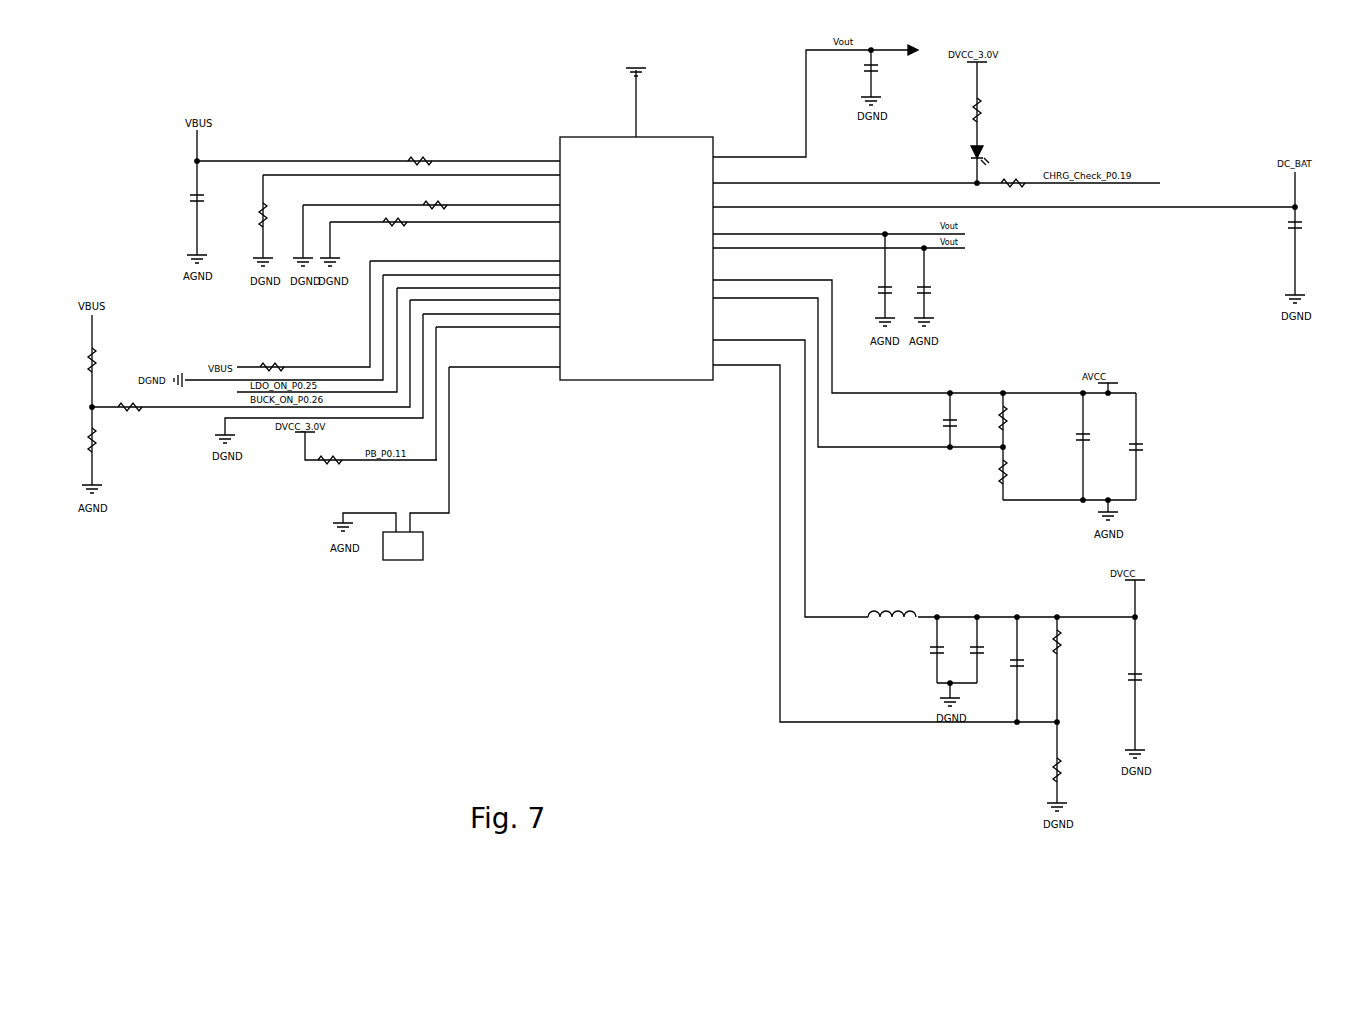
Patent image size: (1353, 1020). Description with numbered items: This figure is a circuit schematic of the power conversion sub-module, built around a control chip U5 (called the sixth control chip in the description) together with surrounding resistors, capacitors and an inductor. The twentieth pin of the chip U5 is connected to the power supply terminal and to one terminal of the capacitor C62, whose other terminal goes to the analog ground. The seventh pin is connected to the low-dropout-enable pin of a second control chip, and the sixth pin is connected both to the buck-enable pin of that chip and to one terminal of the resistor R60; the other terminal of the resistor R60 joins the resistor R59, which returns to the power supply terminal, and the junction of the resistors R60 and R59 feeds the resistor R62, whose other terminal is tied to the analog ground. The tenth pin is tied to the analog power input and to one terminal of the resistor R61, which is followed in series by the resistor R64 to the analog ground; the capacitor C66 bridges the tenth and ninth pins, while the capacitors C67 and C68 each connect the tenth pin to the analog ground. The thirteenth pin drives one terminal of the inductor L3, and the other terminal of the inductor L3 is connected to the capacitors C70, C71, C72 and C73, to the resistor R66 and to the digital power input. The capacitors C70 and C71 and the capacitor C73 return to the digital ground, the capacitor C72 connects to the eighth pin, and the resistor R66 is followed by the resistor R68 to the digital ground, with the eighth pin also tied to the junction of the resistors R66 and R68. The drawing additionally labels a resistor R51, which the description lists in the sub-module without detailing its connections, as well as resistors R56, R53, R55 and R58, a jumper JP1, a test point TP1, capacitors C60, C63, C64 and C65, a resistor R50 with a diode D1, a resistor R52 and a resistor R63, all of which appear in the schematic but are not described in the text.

The power management IC U5 is at (637, 219).
The capacitor C62 is at (208, 199).
The resistor R51 is at (420, 155).
The resistor R56 is at (273, 215).
The resistor R53 is at (435, 199).
The resistor R55 is at (395, 216).
The resistor R58 is at (272, 361).
The resistor R60 is at (130, 401).
The resistor R61 is at (330, 454).
The jumper JP1 is at (403, 559).
The resistor R59 is at (102, 360).
The resistor R62 is at (102, 440).
The test point TP1 is at (920, 55).
The capacitor C60 is at (881, 73).
The resistor R50 is at (988, 110).
The LED D1 is at (988, 155).
The resistor R52 is at (1013, 177).
The capacitor C63 is at (1305, 227).
The capacitor C64 is at (894, 276).
The capacitor C65 is at (933, 283).
The capacitor C66 is at (959, 420).
The resistor R63 is at (1013, 420).
The resistor R64 is at (1013, 473).
The capacitor C67 is at (1093, 446).
The capacitor C68 is at (1146, 446).
The inductor L3 is at (891, 608).
The capacitor C70 is at (946, 650).
The capacitor C71 is at (986, 650).
The capacitor C72 is at (1026, 669).
The resistor R66 is at (1067, 669).
The resistor R68 is at (1067, 762).
The capacitor C73 is at (1144, 678).